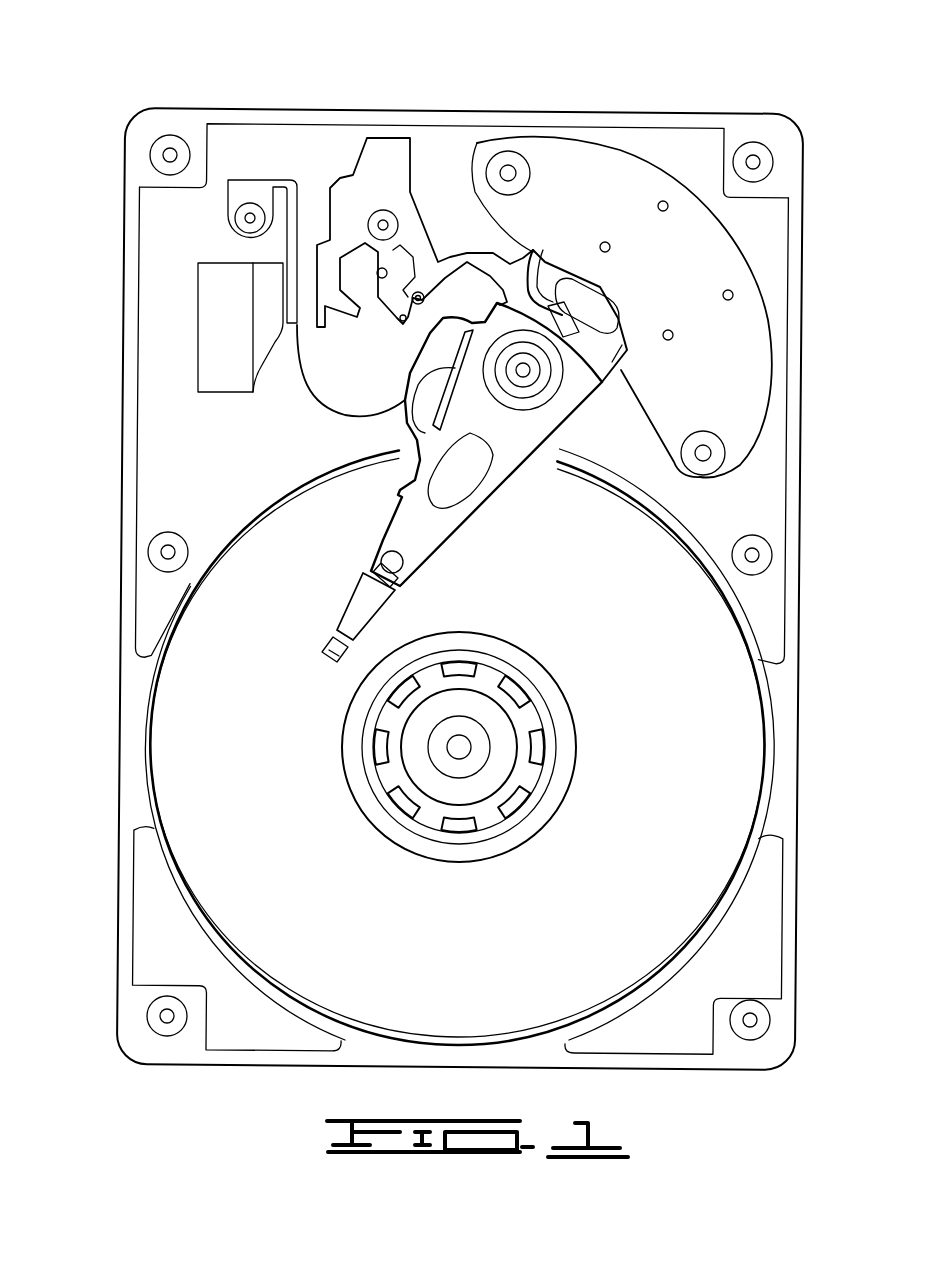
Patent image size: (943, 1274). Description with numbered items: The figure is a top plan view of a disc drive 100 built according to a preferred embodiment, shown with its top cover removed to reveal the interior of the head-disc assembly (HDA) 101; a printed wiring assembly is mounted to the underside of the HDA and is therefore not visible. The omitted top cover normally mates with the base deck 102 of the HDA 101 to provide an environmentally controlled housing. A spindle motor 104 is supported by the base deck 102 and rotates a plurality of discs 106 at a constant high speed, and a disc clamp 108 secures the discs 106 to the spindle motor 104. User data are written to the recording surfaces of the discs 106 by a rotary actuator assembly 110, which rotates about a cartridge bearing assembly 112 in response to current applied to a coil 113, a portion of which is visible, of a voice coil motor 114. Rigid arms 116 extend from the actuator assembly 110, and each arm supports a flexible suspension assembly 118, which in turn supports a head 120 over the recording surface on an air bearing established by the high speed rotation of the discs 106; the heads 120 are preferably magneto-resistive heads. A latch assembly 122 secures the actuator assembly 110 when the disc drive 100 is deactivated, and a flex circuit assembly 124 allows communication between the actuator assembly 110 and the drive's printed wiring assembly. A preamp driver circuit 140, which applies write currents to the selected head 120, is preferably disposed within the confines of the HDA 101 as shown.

The disc drive 100 is at (237, 90).
The head-disc assembly (HDA) 101 is at (131, 168).
The base deck 102 is at (217, 456).
The spindle motor 104 is at (464, 772).
The discs 106 is at (690, 840).
The disc clamp 108 is at (358, 788).
The rotary actuator assembly 110 is at (496, 438).
The cartridge bearing assembly 112 is at (548, 398).
The coil 113 is at (616, 330).
The voice coil motor (VCM) 114 is at (560, 207).
The rigid arms 116 is at (400, 541).
The flexible suspension assembly 118 is at (352, 618).
The heads 120 is at (326, 650).
The latch assembly 122 is at (388, 160).
The flex circuit assembly 124 is at (324, 421).
The preamp driver circuit (preamp) 140 is at (440, 378).